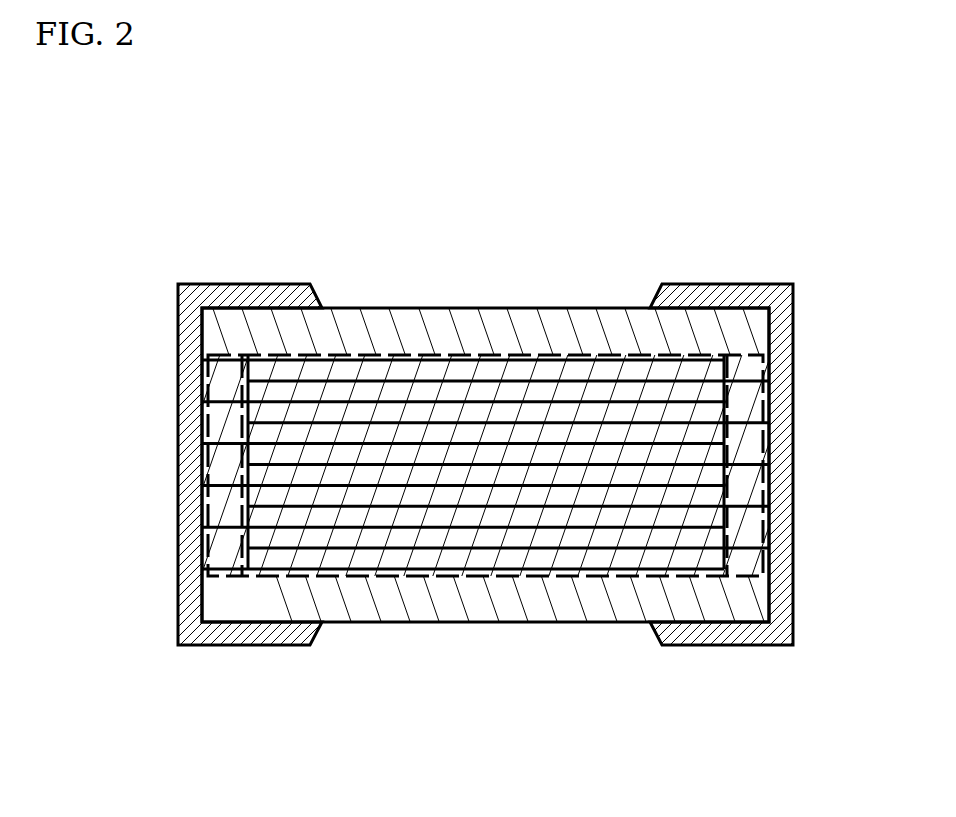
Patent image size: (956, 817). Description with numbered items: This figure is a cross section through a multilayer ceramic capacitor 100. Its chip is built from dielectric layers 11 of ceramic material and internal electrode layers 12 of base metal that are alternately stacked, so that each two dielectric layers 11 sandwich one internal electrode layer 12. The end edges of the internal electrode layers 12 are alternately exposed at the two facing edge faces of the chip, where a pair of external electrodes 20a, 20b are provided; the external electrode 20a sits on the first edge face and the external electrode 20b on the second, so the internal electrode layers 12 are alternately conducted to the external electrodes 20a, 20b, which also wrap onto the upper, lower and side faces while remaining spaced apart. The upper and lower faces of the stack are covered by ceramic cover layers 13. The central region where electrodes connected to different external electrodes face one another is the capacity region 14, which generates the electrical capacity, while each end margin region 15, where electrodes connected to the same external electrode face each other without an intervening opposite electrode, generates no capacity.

The multilayer ceramic capacitor 100 is at (698, 230).
The dielectric layer 11 is at (600, 535).
The internal electrode layer 12 is at (477, 507).
The cover layer 13 is at (387, 320).
The capacity region 14 is at (507, 355).
The end margin region 15 is at (225, 353).
The external electrode 20a is at (205, 283).
The external electrode 20b is at (760, 283).